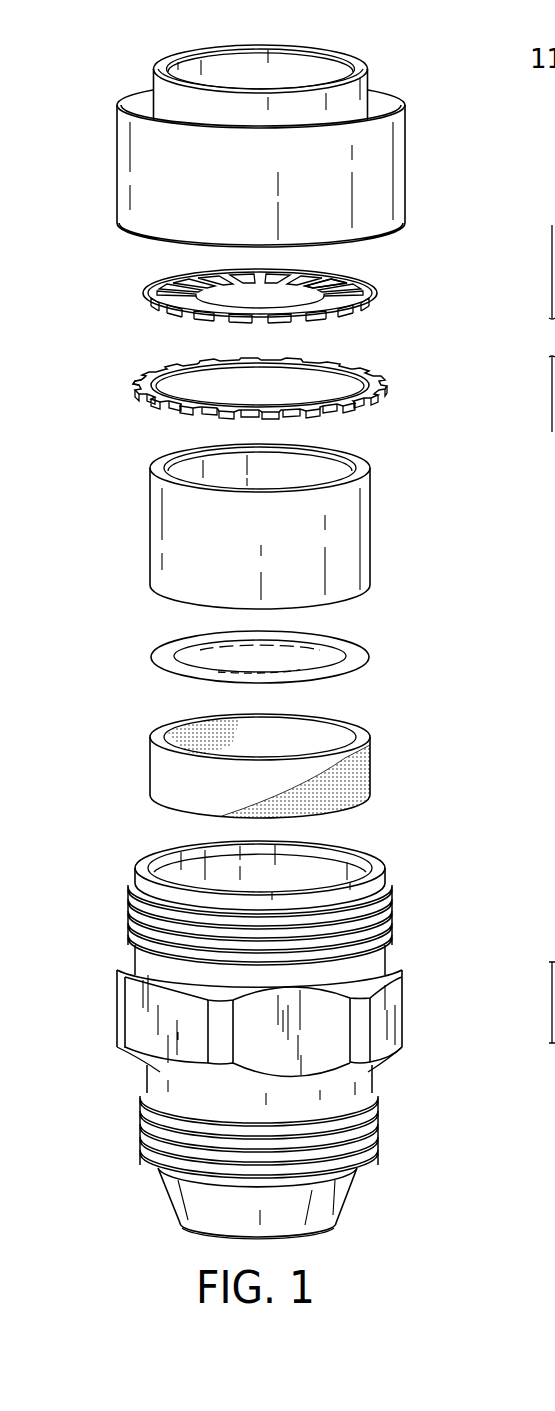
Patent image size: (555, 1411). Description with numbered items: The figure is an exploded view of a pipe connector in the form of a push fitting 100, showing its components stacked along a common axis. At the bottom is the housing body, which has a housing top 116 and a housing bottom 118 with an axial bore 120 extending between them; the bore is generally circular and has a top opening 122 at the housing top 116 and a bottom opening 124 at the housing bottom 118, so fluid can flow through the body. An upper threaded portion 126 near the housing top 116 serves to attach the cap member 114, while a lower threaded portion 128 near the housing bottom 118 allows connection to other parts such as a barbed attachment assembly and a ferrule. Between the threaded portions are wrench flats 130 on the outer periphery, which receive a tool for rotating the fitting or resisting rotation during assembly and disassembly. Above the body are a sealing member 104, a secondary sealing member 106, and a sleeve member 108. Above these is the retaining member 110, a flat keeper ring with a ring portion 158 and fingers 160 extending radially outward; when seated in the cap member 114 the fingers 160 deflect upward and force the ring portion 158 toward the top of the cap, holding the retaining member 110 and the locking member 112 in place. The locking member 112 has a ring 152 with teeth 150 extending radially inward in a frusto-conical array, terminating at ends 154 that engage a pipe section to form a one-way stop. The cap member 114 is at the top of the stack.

The push fitting 100 is at (103, 96).
The sealing member 104 is at (144, 745).
The secondary sealing member 106 is at (149, 645).
The sleeve member 108 is at (381, 525).
The retaining member 110 is at (388, 413).
The locking member 112 is at (139, 306).
The cap member 114 is at (411, 89).
The housing top 116 is at (353, 836).
The housing bottom 118 is at (336, 1231).
The axial bore 120 is at (198, 868).
The top opening 122 is at (379, 862).
The bottom opening 124 is at (181, 1231).
The upper threaded portion 126 is at (137, 906).
The lower threaded portion 128 is at (379, 1120).
The wrench flats 130 is at (134, 1023).
The teeth 150 is at (170, 288).
The ring 152 is at (377, 300).
The ends 154 is at (345, 276).
The ring portion 158 is at (372, 372).
The fingers 160 is at (136, 390).